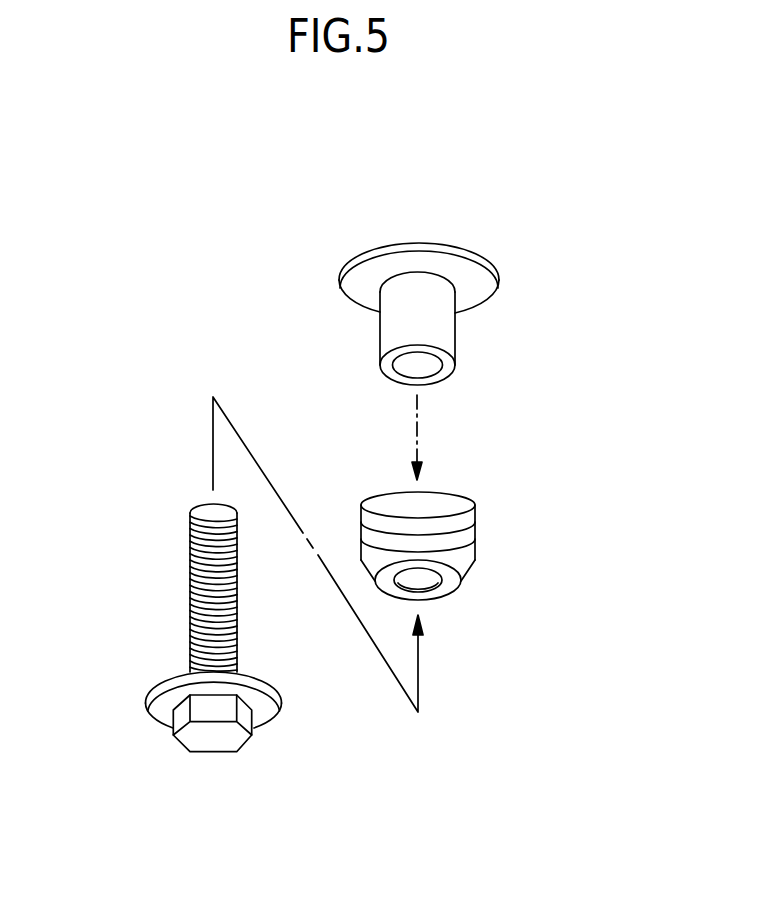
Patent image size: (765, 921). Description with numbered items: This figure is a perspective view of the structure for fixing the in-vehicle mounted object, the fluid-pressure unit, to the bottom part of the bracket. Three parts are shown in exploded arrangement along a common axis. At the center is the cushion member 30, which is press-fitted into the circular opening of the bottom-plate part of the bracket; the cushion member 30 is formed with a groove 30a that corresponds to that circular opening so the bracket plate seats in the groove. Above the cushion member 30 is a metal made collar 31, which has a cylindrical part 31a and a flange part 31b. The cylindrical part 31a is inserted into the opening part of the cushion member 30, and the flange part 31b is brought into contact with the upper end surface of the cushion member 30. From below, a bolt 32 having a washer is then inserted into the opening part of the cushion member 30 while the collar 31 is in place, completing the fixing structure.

The cushion member 30 is at (479, 506).
The groove 30a is at (454, 520).
The collar 31 is at (378, 262).
The cylindrical part 31a is at (435, 340).
The flange part 31b is at (455, 255).
The bolt 32 is at (170, 655).